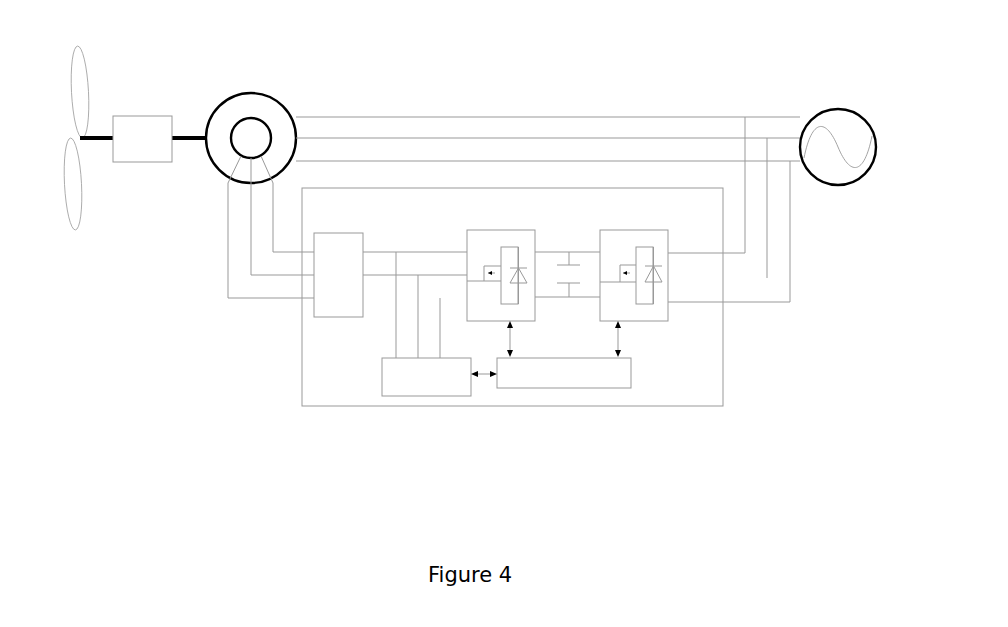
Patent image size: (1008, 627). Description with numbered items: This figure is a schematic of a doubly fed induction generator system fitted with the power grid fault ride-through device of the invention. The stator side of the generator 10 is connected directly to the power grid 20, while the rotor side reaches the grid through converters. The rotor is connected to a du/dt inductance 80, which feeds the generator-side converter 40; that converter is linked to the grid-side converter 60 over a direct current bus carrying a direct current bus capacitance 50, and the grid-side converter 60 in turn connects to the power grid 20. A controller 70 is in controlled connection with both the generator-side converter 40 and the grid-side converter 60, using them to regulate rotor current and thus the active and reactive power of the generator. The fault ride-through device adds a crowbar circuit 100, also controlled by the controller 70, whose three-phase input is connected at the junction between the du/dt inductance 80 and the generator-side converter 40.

The generator 10 is at (247, 110).
The power grid 20 is at (842, 127).
The generator-side converter 40 is at (487, 305).
The direct current bus capacitance 50 is at (562, 263).
The grid-side converter 60 is at (638, 304).
The controller 70 is at (562, 388).
The du/dt inductance 80 is at (334, 242).
The crowbar circuit 100 is at (413, 396).